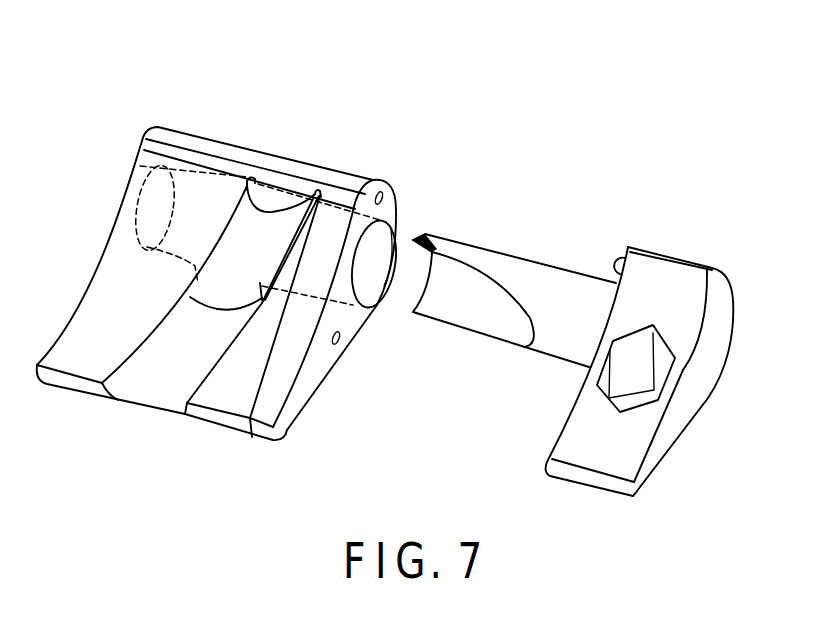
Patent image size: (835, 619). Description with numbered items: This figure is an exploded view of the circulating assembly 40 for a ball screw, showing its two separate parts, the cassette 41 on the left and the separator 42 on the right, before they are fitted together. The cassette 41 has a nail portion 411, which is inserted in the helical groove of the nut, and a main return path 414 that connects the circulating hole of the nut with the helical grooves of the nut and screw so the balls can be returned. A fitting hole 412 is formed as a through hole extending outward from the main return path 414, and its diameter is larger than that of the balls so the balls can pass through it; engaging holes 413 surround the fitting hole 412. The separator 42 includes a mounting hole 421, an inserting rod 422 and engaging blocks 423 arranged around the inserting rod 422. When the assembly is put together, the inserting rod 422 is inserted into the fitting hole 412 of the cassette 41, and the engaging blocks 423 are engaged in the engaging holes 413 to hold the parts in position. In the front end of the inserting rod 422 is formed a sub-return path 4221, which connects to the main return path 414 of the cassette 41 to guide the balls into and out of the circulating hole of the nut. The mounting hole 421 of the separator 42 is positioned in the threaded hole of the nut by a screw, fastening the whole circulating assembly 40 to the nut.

The circulating assembly 40 is at (566, 108).
The cassette 41 is at (148, 168).
The nail portion 411 is at (257, 248).
The fitting hole 412 is at (378, 245).
The engaging holes 413 is at (381, 192).
The main return path 414 is at (209, 196).
The separator 42 is at (683, 278).
The mounting hole 421 is at (645, 367).
The inserting rod 422 is at (543, 263).
The sub-return path 4221 is at (485, 308).
The engaging blocks 423 is at (613, 252).